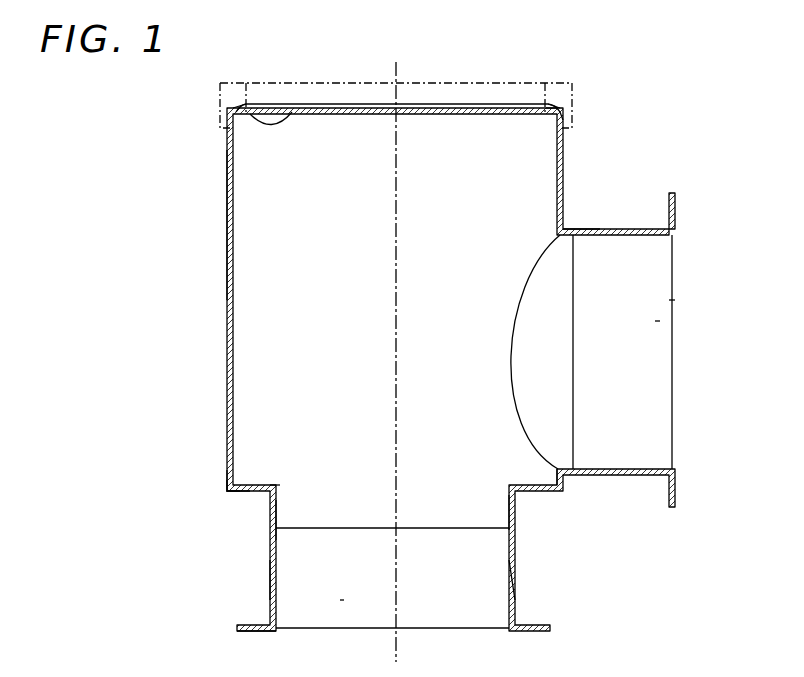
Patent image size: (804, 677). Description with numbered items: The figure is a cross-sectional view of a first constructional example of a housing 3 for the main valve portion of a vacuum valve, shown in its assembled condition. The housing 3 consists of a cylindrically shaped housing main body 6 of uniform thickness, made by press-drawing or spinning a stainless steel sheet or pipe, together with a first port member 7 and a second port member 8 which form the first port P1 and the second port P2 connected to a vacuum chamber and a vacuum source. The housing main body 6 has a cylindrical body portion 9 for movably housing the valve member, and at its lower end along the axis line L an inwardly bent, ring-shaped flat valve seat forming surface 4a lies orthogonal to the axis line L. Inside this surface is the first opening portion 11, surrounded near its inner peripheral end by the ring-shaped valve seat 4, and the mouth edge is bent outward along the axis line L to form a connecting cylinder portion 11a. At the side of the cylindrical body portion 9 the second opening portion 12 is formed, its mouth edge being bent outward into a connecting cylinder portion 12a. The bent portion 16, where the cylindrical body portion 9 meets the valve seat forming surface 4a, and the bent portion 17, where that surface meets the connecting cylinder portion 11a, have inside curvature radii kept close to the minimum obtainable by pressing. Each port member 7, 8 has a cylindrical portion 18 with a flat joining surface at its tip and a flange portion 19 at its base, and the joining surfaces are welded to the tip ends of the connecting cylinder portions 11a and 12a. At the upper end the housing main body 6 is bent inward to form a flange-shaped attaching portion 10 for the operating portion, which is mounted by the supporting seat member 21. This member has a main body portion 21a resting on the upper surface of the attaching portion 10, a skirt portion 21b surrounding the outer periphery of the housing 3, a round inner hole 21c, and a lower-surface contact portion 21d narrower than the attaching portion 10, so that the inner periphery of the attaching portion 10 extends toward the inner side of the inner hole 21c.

The housing 3 is at (203, 142).
The valve seat 4 is at (512, 488).
The valve seat forming surface 4a is at (236, 481).
The housing main body 6 is at (226, 190).
The first port member 7 is at (526, 581).
The second port member 8 is at (690, 255).
The cylindrical body portion 9 is at (228, 250).
The attaching portion 10 is at (552, 105).
The first opening portion 11 is at (516, 508).
The connecting cylinder portion 11a is at (272, 520).
The second opening portion 12 is at (577, 240).
The connecting cylinder portion 12a is at (565, 474).
The bent portion 16 is at (228, 490).
The bent portion 17 is at (277, 488).
The cylindrical portion 18 is at (272, 577).
The flange portion 19 is at (243, 630).
The supporting seat member 21 is at (645, 68).
The main body portion 21a is at (566, 92).
The skirt portion 21b is at (570, 122).
The inner hole 21c is at (246, 92).
The contact portion of lower surface 21d is at (288, 110).
The axis line L is at (392, 349).
The first port P1 is at (342, 602).
The second port P2 is at (655, 321).